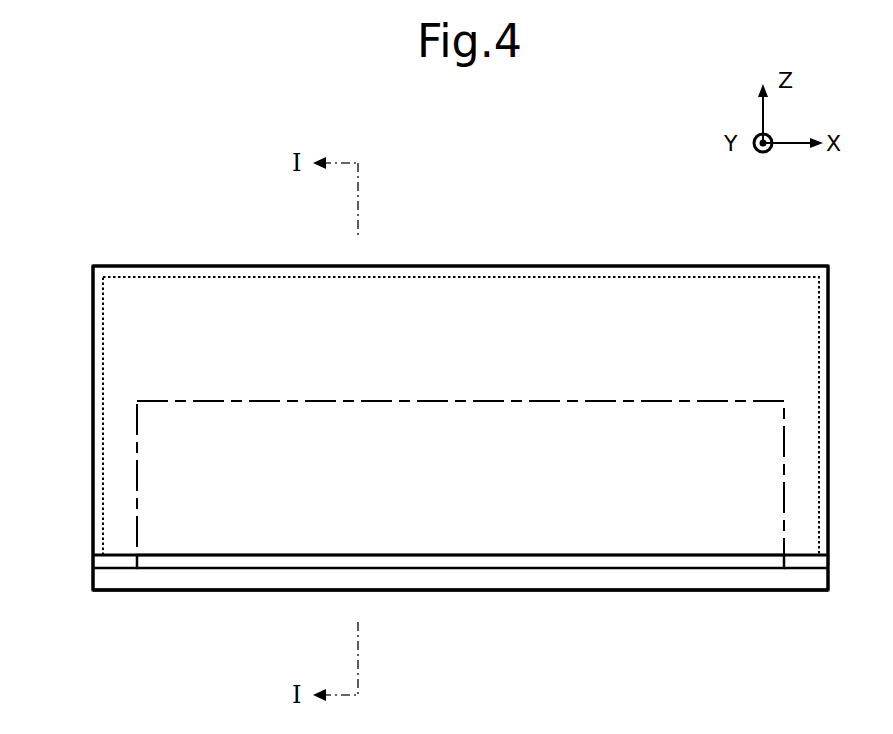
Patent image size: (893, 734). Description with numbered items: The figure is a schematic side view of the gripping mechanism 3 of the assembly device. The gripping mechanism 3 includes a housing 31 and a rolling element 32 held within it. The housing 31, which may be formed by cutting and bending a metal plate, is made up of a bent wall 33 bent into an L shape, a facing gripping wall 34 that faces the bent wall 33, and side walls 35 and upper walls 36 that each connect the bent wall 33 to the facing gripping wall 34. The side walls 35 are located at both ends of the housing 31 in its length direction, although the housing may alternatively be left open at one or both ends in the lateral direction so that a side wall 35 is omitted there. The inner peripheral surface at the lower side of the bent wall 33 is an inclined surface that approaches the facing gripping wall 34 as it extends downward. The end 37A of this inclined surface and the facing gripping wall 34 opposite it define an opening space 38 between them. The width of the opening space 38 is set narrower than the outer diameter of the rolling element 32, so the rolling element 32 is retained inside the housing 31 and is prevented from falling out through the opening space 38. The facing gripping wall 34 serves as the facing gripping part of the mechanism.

The gripping mechanism 3 is at (436, 260).
The housing 31 is at (212, 266).
The rolling element 32 is at (583, 568).
The bent wall 33 is at (785, 370).
The facing gripping wall 34 is at (745, 575).
The side walls 35 is at (93, 338).
The upper walls 36 is at (608, 266).
The end of inclined surface 37A is at (655, 555).
The opening space 38 is at (493, 577).